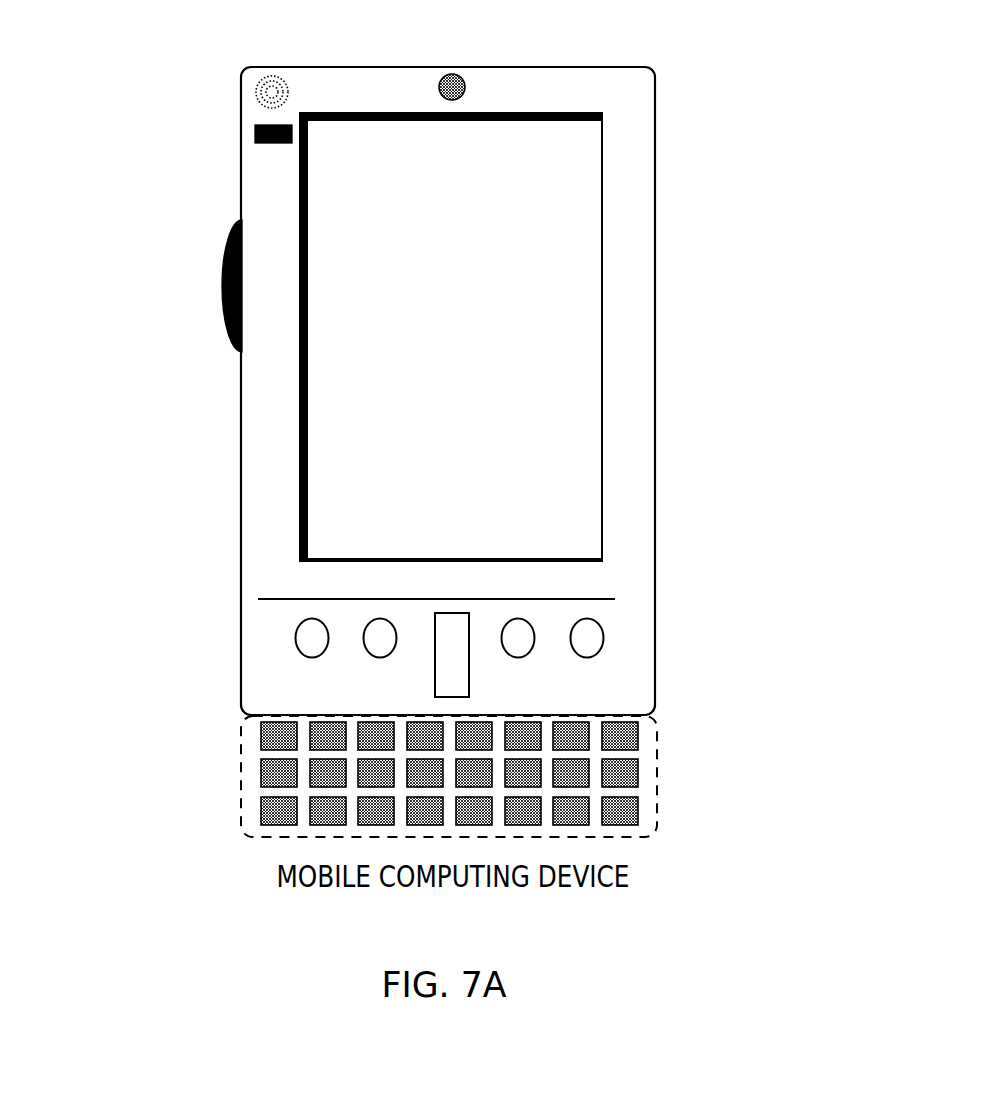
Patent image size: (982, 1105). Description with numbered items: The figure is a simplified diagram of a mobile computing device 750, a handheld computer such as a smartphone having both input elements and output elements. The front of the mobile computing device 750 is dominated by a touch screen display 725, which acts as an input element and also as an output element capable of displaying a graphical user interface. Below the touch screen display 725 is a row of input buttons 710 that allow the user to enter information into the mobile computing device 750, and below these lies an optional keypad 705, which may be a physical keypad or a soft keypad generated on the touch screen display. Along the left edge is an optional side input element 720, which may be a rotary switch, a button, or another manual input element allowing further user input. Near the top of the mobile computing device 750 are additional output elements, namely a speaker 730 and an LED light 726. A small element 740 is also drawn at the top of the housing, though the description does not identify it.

The keypad 705 is at (240, 806).
The input buttons 710 is at (588, 648).
The side input element 720 is at (218, 293).
The touch screen display 725 is at (327, 497).
The LED light 726 is at (253, 128).
The speaker 730 is at (255, 82).
The camera 740 is at (459, 80).
The mobile computing device 750 is at (657, 84).